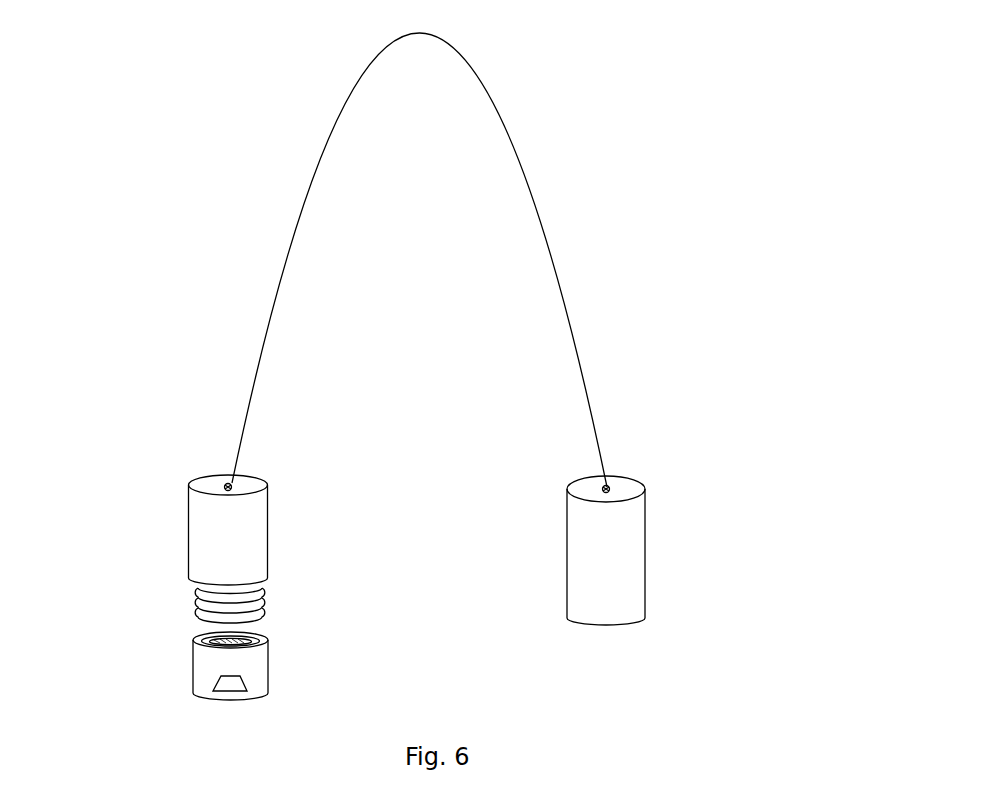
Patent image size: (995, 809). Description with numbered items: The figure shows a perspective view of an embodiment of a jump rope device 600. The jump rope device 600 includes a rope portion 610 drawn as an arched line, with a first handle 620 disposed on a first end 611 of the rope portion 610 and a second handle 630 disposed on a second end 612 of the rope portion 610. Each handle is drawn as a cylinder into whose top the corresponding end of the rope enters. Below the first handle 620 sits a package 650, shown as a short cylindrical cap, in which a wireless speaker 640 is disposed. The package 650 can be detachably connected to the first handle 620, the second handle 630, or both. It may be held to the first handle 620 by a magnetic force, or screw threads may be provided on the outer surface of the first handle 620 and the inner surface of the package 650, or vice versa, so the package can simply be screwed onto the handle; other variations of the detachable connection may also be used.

The jump rope device 600 is at (303, 52).
The rope portion 610 is at (553, 253).
The first end 611 is at (227, 483).
The second end 612 is at (608, 477).
The first handle 620 is at (188, 533).
The second handle 630 is at (645, 550).
The wireless speaker 640 is at (193, 672).
The package 650 is at (215, 677).